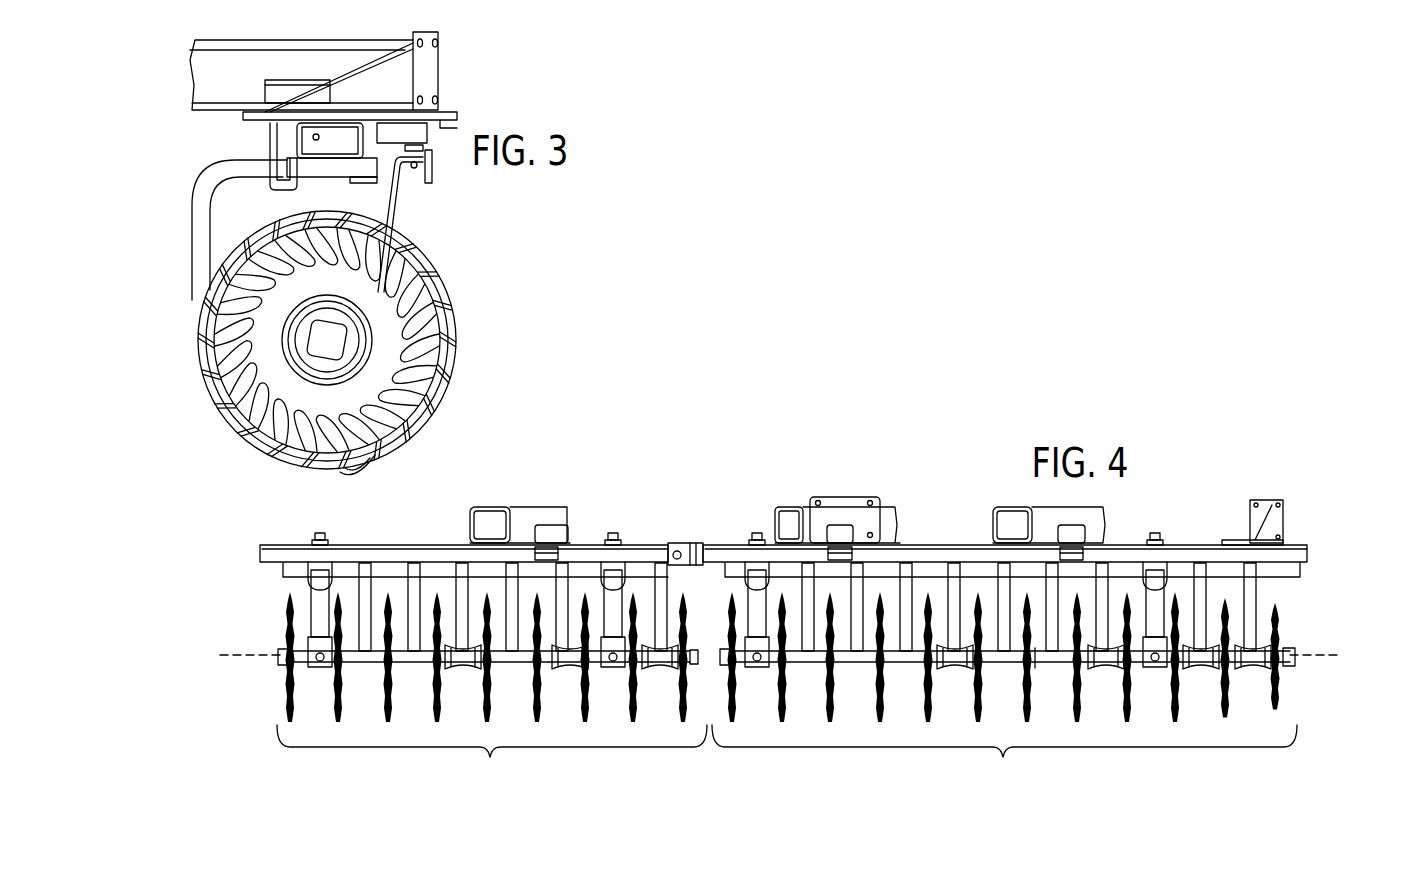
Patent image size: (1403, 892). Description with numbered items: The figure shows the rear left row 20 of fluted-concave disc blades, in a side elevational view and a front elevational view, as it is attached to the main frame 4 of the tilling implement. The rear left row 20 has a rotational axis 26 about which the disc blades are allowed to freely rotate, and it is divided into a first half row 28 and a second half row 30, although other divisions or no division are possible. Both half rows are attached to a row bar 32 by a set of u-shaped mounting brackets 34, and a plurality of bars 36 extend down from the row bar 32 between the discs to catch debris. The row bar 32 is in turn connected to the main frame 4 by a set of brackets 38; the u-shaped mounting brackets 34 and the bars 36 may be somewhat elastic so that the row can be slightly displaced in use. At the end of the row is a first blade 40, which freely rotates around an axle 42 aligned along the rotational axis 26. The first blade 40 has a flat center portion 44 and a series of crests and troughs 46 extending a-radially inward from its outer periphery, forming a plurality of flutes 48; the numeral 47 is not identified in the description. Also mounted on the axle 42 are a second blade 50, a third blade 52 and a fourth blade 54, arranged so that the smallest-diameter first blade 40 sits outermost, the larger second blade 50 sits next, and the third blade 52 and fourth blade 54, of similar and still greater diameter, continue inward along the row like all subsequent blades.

In FIG. 4, the main frame 4 is at (530, 507).
In FIG. 3, the rear left row 20 is at (150, 112).
In FIG. 4, the rear left row 20 is at (860, 482).
In FIG. 4, the rotational axis 26 is at (799, 657).
In FIG. 4, the first half row 28 is at (492, 620).
In FIG. 4, the second half row 30 is at (1027, 606).
In FIG. 3, the row bar 32 is at (317, 133).
In FIG. 4, the row bar 32 is at (725, 550).
In FIG. 3, the u-shaped mounting brackets 34 is at (197, 222).
In FIG. 4, the u-shaped mounting brackets 34 is at (1158, 585).
In FIG. 3, the bars 36 is at (393, 211).
In FIG. 4, the bars 36 is at (905, 588).
In FIG. 4, the brackets 38 is at (551, 535).
In FIG. 3, the first blade 40 is at (366, 354).
In FIG. 4, the first blade 40 is at (1035, 657).
In FIG. 3, the axle 42 is at (300, 332).
In FIG. 4, the axle 42 is at (1040, 660).
In FIG. 3, the flat center portion 44 is at (260, 361).
In FIG. 3, the series of crests and troughs 46 is at (424, 385).
In FIG. 3, the blade tip 47 is at (355, 479).
In FIG. 3, the flutes 48 is at (420, 418).
In FIG. 3, the second blade 50 is at (458, 312).
In FIG. 4, the second blade 50 is at (1235, 706).
In FIG. 3, the third blade 52 is at (446, 262).
In FIG. 4, the third blade 52 is at (1182, 711).
In FIG. 4, the fourth blade 54 is at (1130, 715).